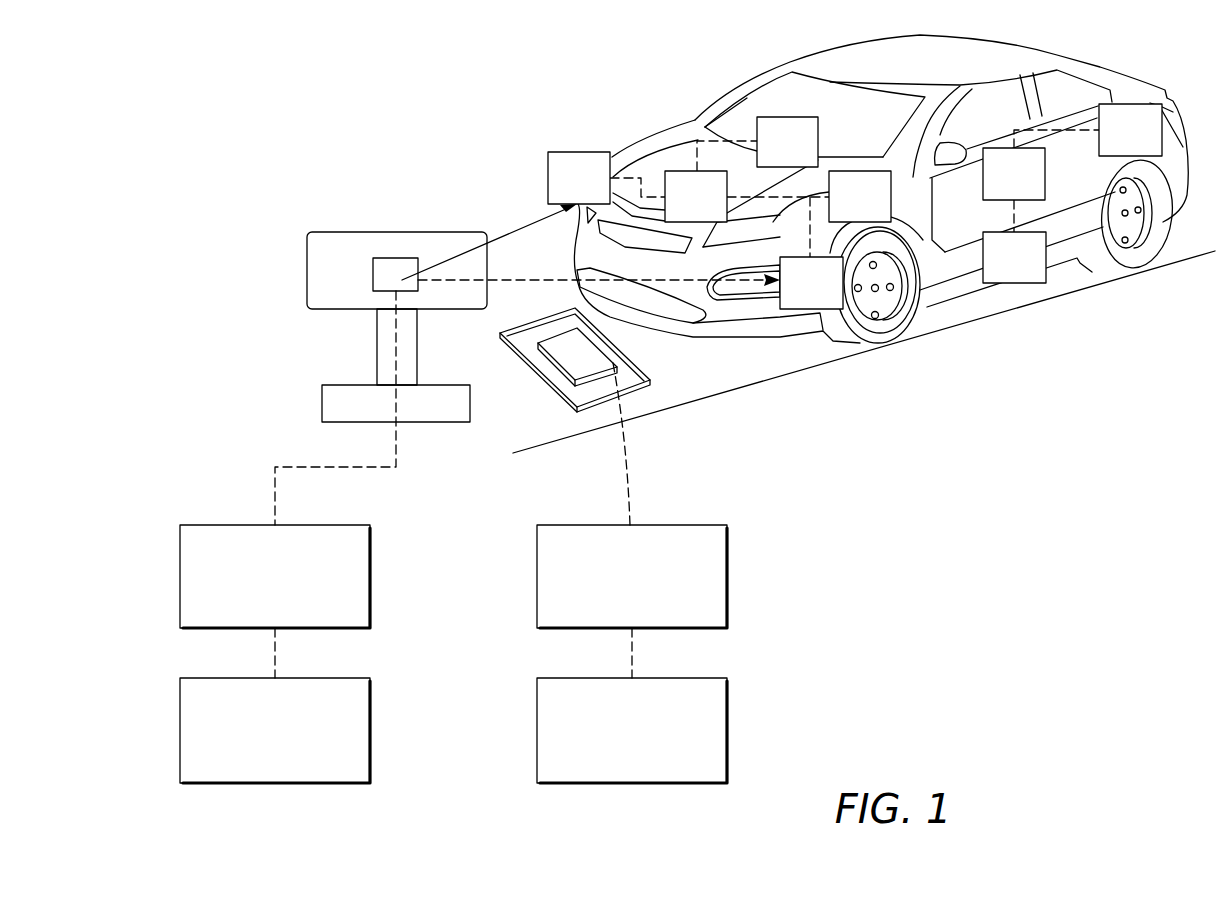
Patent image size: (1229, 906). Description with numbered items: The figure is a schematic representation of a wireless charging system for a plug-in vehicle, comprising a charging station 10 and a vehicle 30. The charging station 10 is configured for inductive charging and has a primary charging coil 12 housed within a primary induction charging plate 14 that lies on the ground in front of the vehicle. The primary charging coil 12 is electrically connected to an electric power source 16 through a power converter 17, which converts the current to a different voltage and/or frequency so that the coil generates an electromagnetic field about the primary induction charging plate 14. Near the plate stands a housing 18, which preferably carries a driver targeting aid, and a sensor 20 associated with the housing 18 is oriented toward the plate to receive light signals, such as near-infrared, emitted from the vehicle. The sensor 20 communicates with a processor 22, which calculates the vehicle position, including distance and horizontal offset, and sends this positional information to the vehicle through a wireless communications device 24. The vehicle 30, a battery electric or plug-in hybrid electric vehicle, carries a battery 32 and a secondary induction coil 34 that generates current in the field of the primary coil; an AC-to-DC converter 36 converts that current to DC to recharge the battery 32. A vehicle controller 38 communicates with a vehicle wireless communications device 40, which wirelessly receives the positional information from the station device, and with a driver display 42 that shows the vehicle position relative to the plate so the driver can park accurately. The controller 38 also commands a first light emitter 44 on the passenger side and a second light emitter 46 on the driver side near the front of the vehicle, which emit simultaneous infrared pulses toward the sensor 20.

The charging station 10 is at (367, 105).
The primary charging coil 12 is at (587, 363).
The primary induction charging plate 14 is at (558, 395).
The electric power source 16 is at (537, 730).
The power converter 17 is at (537, 577).
The housing 18 is at (347, 232).
The sensor 20 is at (373, 280).
The processor 22 is at (180, 578).
The wireless communications device 24 is at (180, 730).
The vehicle 30 is at (932, 38).
The battery 32 is at (1119, 142).
The secondary induction coil 34 is at (1003, 270).
The AC-to-DC converter 36 is at (1003, 186).
The vehicle controller 38 is at (685, 209).
The vehicle wireless communications device 40 is at (849, 209).
The driver display 42 is at (776, 154).
The first light emitter 44 is at (568, 190).
The second light emitter 46 is at (800, 295).